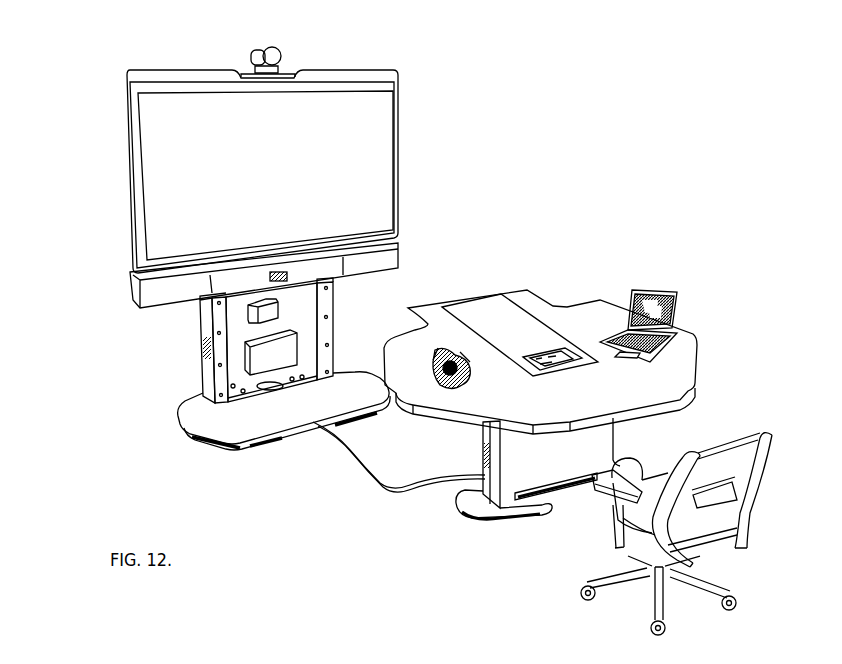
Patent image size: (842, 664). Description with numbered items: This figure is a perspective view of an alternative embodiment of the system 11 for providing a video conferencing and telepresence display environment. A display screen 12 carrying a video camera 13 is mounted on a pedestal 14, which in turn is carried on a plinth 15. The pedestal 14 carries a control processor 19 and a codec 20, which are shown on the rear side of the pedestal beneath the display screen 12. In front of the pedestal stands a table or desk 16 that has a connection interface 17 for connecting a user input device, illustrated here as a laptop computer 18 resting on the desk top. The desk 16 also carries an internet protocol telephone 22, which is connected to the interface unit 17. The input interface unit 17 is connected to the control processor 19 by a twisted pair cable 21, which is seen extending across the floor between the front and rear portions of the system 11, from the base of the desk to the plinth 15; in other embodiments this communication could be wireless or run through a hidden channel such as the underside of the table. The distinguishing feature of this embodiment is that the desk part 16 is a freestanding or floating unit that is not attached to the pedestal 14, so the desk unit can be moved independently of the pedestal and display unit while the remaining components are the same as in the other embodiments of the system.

The system 11 is at (398, 324).
The display screen 12 is at (130, 152).
The video camera 13 is at (275, 50).
The pedestal 14 is at (207, 372).
The plinth 15 is at (203, 421).
The table or desk 16 is at (538, 310).
The connection interface 17 is at (577, 366).
The laptop computer 18 is at (660, 288).
The control processor 19 is at (290, 352).
The codec 20 is at (258, 313).
The twisted pair cable 21 is at (358, 452).
The internet protocol (IP) telephone 22 is at (442, 385).